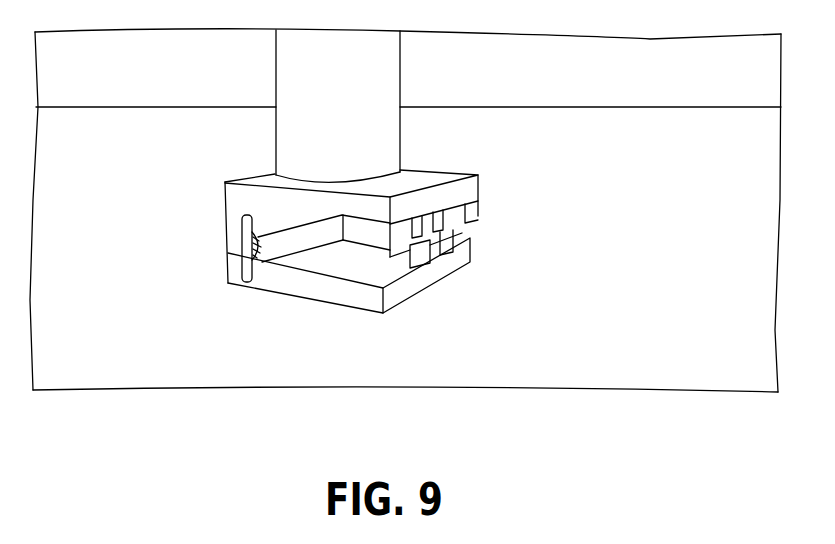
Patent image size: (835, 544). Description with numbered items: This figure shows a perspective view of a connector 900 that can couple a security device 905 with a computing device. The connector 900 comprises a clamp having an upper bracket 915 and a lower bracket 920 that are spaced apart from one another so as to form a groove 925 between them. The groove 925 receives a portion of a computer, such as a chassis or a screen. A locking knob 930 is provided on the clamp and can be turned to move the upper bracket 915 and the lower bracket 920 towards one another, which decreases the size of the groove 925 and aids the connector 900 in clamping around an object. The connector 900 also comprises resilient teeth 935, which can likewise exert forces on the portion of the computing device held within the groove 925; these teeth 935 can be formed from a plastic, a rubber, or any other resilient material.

The connector 900 is at (464, 124).
The security device 905 is at (251, 82).
The upper bracket 915 is at (481, 181).
The lower bracket 920 is at (442, 263).
The groove 925 is at (297, 246).
The locking knob 930 is at (240, 250).
The resilient teeth 935 is at (500, 220).